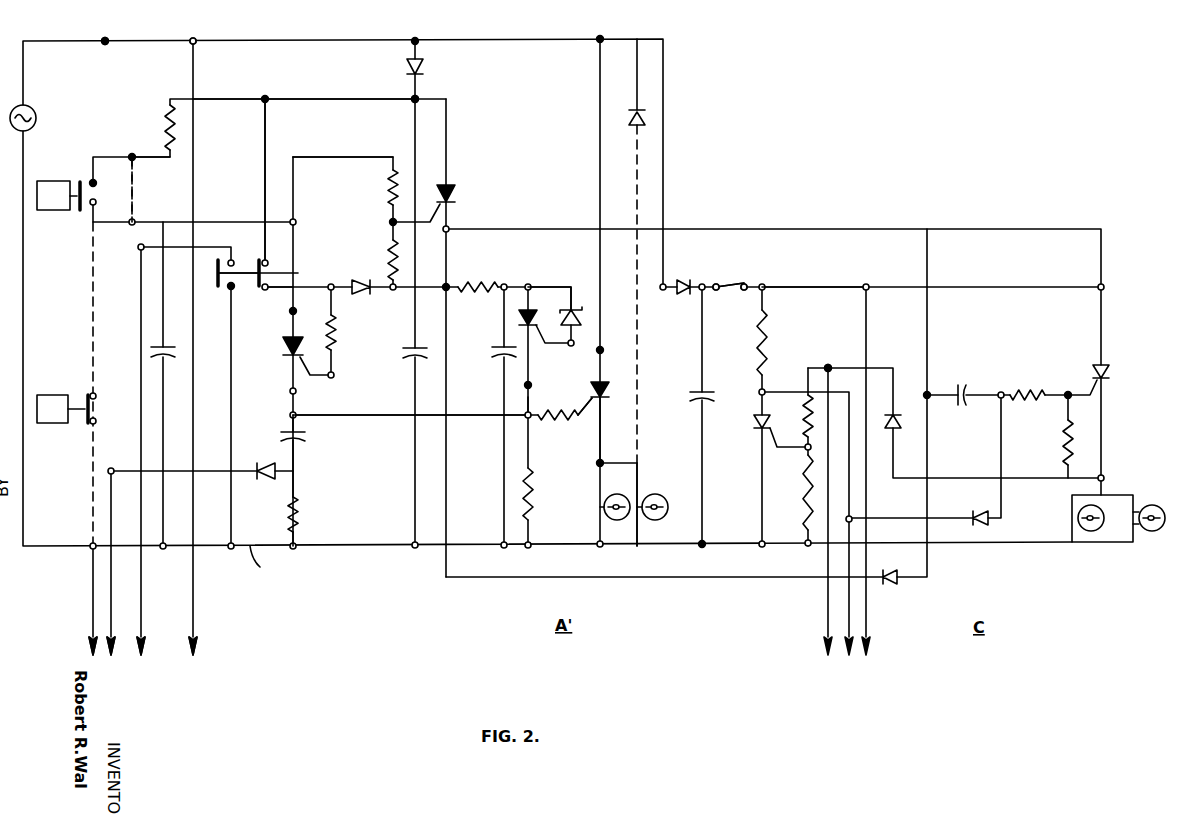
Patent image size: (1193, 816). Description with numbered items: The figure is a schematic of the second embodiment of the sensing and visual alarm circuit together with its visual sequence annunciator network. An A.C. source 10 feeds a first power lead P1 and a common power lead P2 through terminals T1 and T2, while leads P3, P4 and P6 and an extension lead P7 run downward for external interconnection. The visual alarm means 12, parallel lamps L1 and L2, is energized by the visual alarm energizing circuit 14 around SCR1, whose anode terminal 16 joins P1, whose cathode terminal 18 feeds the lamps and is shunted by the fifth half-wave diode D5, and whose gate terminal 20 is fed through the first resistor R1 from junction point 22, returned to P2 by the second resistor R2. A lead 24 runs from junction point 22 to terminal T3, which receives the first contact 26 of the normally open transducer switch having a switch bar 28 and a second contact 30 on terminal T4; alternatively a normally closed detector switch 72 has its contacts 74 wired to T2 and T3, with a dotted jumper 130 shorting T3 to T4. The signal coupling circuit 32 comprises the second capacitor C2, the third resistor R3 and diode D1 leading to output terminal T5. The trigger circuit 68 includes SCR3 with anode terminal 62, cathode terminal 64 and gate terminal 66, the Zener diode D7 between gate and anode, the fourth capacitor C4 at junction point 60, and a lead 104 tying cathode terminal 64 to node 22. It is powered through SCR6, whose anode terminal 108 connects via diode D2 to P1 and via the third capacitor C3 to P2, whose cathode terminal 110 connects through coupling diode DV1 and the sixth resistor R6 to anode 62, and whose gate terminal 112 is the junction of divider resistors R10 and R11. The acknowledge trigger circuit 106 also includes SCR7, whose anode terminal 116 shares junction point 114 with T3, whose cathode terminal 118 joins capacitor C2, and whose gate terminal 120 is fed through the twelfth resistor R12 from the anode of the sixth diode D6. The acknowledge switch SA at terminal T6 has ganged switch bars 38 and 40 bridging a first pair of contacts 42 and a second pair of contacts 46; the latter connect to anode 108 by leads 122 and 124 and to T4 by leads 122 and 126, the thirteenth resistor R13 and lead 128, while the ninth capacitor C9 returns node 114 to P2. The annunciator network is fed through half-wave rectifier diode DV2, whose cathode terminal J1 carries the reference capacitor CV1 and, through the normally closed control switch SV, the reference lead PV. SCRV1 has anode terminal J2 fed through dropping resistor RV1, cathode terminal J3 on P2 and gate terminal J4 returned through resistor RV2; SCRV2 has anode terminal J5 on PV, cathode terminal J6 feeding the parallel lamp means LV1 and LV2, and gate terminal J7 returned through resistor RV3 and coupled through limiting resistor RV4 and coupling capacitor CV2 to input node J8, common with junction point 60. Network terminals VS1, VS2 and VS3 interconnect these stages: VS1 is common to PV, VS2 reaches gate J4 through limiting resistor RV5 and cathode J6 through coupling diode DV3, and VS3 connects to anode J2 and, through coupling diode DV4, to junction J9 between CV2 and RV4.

The A.C. source 10 is at (36, 112).
The visual alarm means 12 is at (653, 478).
The visual alarm energizing circuit 14 is at (620, 399).
The anode terminal 16 is at (602, 347).
The cathode terminal 18 is at (597, 463).
The gate terminal 20 is at (586, 419).
The junction point 22 is at (525, 418).
The lead 24 is at (428, 418).
The first switch contact 26 is at (96, 202).
The switch bar 28 is at (78, 210).
The second contact 30 is at (92, 181).
The signal coupling circuit 32 is at (329, 480).
The first switch bar 38 is at (215, 270).
The second switch bar 40 is at (269, 273).
The first pair of contacts 42 is at (215, 300).
The second pair of contacts 46 is at (272, 300).
The junction point 60 is at (506, 284).
The anode terminal 62 is at (530, 284).
The cathode terminal 64 is at (525, 386).
The gate terminal 66 is at (570, 347).
The trigger circuit 68 is at (550, 298).
The thermostat Tc 72 is at (86, 422).
The pair of contacts 74 is at (96, 398).
The lead 104 is at (530, 404).
The acknowledge trigger circuit 106 is at (343, 206).
The anode terminal 108 is at (420, 96).
The cathode terminal 110 is at (449, 226).
The gate terminal 112 is at (390, 222).
The junction point 114 is at (296, 220).
The anode terminal 116 is at (291, 313).
The cathode terminal 118 is at (297, 391).
The gate terminal 120 is at (334, 372).
The lead 122 is at (262, 151).
The lead 124 is at (292, 99).
The lead 126 is at (222, 99).
The lead 128 is at (160, 155).
The jumper 130 is at (134, 188).
The first terminal T1 is at (110, 41).
The second terminal T2 is at (90, 549).
The third terminal T3 is at (136, 221).
The fourth terminal T4 is at (131, 155).
The fifth terminal T5 is at (126, 458).
The sixth terminal T6 is at (139, 246).
The first power lead P1 is at (237, 46).
The common power lead P2 is at (267, 562).
The plug terminal P3 is at (193, 628).
The plug terminal P4 is at (91, 634).
The plug terminal P6 is at (111, 628).
The fourth extension lead P7 is at (141, 628).
The thirteenth resistor R13 is at (170, 112).
The tenth resistor R10 is at (392, 186).
The eleventh resistor R11 is at (397, 252).
The twelfth resistor R12 is at (335, 322).
The sixth resistor R6 is at (490, 263).
The first resistor R1 is at (570, 417).
The second resistor R2 is at (533, 500).
The third resistor R3 is at (290, 514).
The diode D1 is at (272, 460).
The diode D2 is at (404, 64).
The fifth half-wave diode D5 is at (645, 118).
The sixth diode D6 is at (362, 296).
The Zener diode D7 is at (581, 318).
The first silicon controlled rectifier SCR1 is at (592, 384).
The third silicon controlled rectifier SCR3 is at (518, 314).
The sixth silicon controlled rectifier SCR6 is at (455, 190).
The seventh silicon controlled rectifier SCR7 is at (286, 358).
The second capacitor C2 is at (286, 432).
The third capacitor C3 is at (431, 352).
The fourth capacitor C4 is at (496, 359).
The ninth capacitor C9 is at (168, 344).
The acknowledge switch SA is at (250, 283).
The first signal lamp L1 is at (616, 520).
The second signal lamp L2 is at (656, 520).
The coupling diode DV1 is at (892, 586).
The half-wave rectifier diode DV2 is at (695, 262).
The coupling diode DV3 is at (900, 423).
The coupling diode DV4 is at (978, 508).
The cathode terminal J1 is at (700, 291).
The anode terminal J2 is at (757, 385).
The cathode terminal J3 is at (760, 540).
The gate terminal J4 is at (804, 450).
The anode terminal J5 is at (1100, 282).
The cathode terminal J6 is at (1104, 476).
The gate terminal J7 is at (1080, 375).
The input node J8 is at (928, 390).
The common junction J9 is at (1003, 390).
The control switch SV is at (728, 282).
The reference lead PV is at (795, 287).
The first network terminal VS1 is at (866, 283).
The second network terminal VS2 is at (845, 350).
The third network terminal VS3 is at (852, 518).
The reference capacitor CV1 is at (700, 402).
The coupling capacitor CV2 is at (962, 385).
The dropping resistor RV1 is at (758, 342).
The resistor RV2 is at (808, 480).
The resistor RV3 is at (1066, 448).
The limiting resistor RV4 is at (1030, 400).
The limiting resistor RV5 is at (806, 402).
The silicon controlled rectifier SCRV1 is at (752, 426).
The silicon controlled rectifier SCRV2 is at (1115, 358).
The lamp means LV1 is at (1091, 531).
The lamp means LV2 is at (1152, 531).